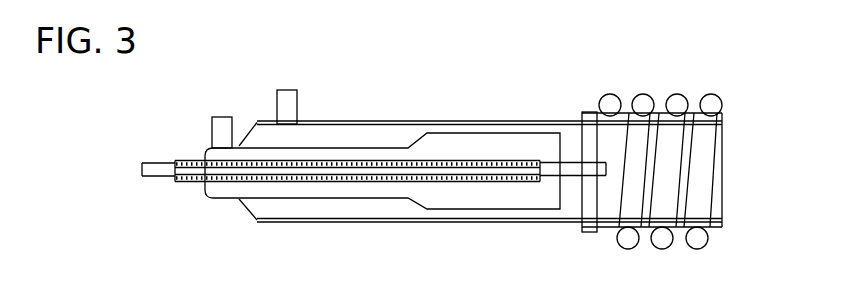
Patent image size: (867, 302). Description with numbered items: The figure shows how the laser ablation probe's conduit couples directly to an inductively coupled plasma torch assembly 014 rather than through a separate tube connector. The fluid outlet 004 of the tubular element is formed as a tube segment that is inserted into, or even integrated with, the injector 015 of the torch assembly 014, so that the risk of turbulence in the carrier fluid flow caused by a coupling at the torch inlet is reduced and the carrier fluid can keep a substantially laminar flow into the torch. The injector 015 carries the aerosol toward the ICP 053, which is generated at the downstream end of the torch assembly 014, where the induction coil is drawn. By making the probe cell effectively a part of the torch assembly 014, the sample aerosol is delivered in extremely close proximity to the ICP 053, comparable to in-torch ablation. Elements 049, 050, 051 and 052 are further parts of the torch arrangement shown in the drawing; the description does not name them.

The torch assembly 014 is at (413, 85).
The injector 015 is at (188, 183).
The rod 049 is at (142, 170).
The post 050 is at (220, 115).
The post 051 is at (289, 90).
The fluid outlet 004 is at (608, 105).
The coil frame 052 is at (608, 162).
The ICP 053 is at (687, 167).